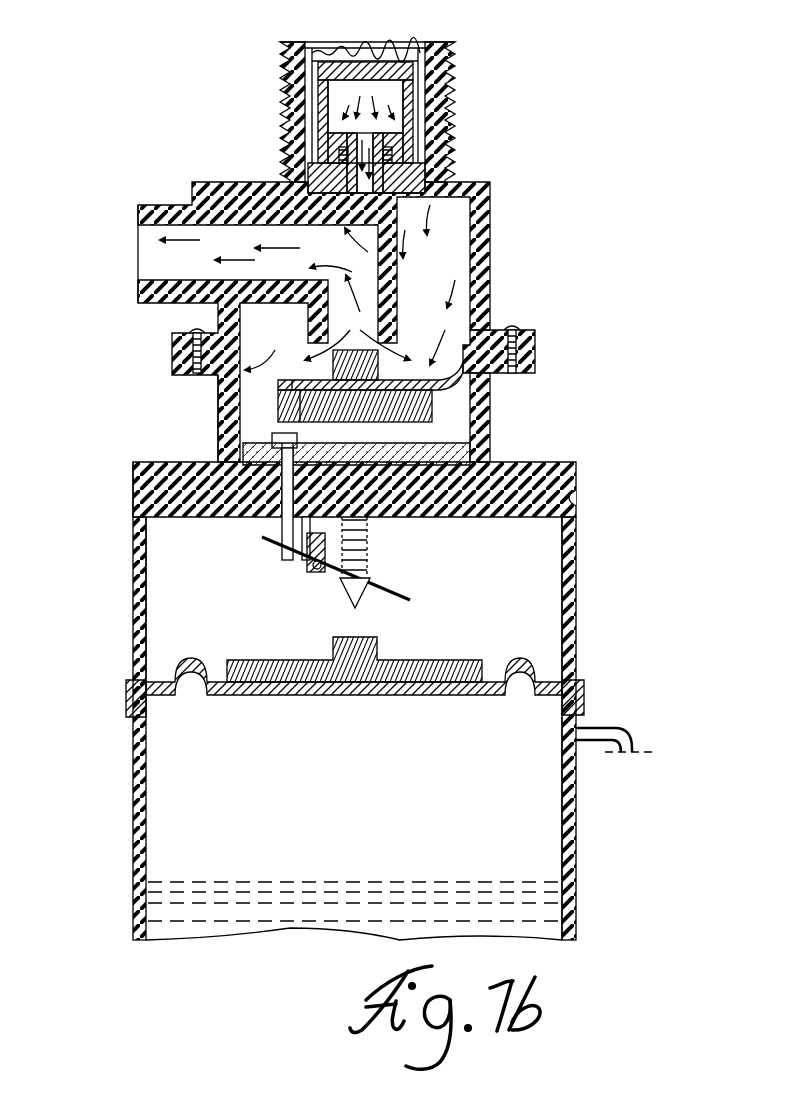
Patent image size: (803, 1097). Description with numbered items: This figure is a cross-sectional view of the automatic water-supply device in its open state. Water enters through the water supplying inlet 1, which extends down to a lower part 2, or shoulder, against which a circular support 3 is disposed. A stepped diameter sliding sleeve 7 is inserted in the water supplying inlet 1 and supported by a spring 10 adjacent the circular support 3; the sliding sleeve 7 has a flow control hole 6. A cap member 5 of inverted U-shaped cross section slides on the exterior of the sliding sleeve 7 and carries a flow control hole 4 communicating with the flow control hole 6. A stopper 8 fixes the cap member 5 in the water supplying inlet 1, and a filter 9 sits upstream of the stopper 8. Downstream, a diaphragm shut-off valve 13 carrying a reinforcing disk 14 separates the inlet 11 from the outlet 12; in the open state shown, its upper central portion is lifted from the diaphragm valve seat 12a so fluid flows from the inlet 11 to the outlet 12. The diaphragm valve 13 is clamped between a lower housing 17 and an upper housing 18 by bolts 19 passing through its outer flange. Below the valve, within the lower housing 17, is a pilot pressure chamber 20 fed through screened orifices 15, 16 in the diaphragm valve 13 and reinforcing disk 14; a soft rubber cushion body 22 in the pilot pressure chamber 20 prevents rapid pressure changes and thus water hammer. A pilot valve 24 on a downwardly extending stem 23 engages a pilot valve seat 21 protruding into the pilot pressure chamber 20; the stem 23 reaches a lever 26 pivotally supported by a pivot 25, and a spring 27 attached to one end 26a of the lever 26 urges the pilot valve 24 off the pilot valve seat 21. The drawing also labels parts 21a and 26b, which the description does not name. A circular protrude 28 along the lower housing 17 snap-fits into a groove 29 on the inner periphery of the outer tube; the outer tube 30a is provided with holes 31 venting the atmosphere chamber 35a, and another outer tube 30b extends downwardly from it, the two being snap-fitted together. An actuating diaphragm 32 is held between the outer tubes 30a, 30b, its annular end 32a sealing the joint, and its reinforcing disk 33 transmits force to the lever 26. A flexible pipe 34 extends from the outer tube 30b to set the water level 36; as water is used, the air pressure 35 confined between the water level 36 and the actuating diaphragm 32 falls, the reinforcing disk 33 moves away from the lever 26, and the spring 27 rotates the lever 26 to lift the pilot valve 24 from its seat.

The water supplying inlet 1 is at (300, 62).
The lower part 2 is at (400, 193).
The circular support 3 is at (420, 178).
The flow control hole 4 is at (327, 108).
The cap member 5 is at (318, 88).
The flow control hole 6 is at (405, 135).
The stepped diameter sliding sleeve 7 is at (340, 143).
The stopper 8 is at (400, 62).
The filter 9 is at (338, 48).
The spring 10 is at (392, 156).
The inlet 11 is at (450, 245).
The outlet 12 is at (150, 240).
The diaphragm valve seat 12a is at (350, 326).
The diaphragm shut-off valve 13 is at (535, 355).
The reinforcing disk 14 is at (432, 403).
The screened orifice 15 is at (300, 382).
The screened orifice 16 is at (300, 402).
The lower housing 17 is at (228, 420).
The upper housing 18 is at (176, 300).
The bolts 19 is at (517, 330).
The pilot pressure chamber 20 is at (465, 425).
The pilot valve seat 21 is at (248, 456).
The bracket 21a is at (305, 522).
The cushion body 22 is at (420, 478).
The stem 23 is at (293, 497).
The pilot valve 24 is at (280, 437).
The pivot 25 is at (312, 568).
The lever 26 is at (268, 545).
The end of lever 26a is at (365, 582).
The pivot 26b is at (300, 558).
The spring 27 is at (370, 558).
The circular protrude 28 is at (572, 480).
The groove 29 is at (577, 505).
The outer tube 30a is at (577, 522).
The outer tube 30b is at (566, 760).
The holes 31 is at (569, 548).
The actuating diaphragm 32 is at (520, 662).
The annular end 32a is at (130, 700).
The reinforcing disk 33 is at (445, 665).
The flexible pipe 34 is at (640, 740).
The air pressure 35 is at (175, 765).
The atmosphere chamber 35a is at (160, 628).
The water level 36 is at (535, 885).